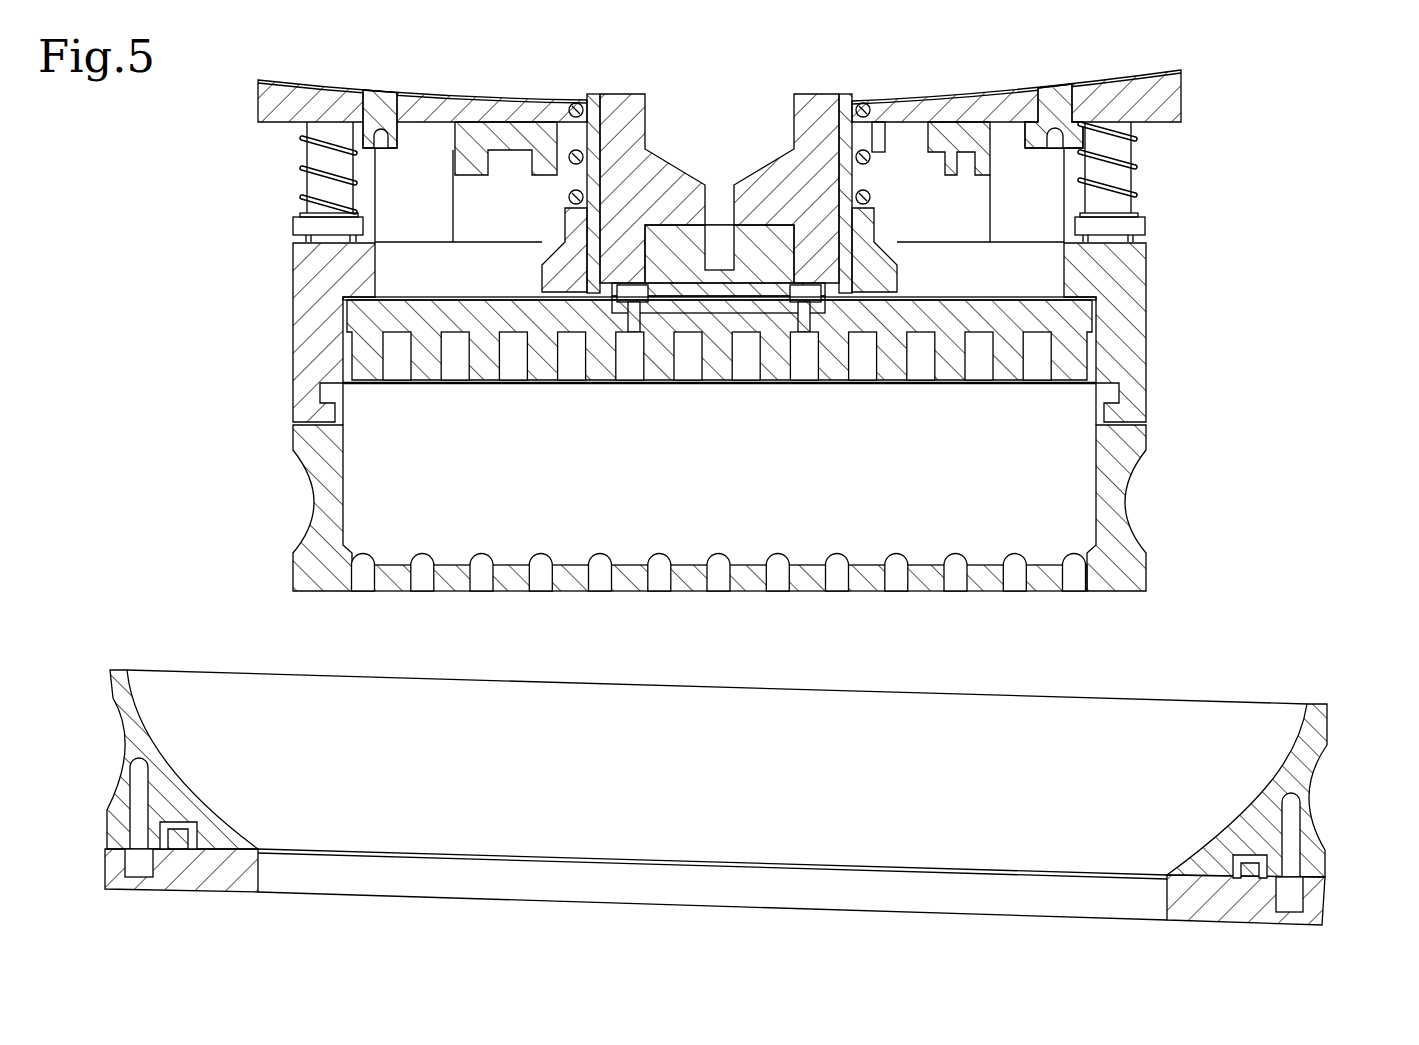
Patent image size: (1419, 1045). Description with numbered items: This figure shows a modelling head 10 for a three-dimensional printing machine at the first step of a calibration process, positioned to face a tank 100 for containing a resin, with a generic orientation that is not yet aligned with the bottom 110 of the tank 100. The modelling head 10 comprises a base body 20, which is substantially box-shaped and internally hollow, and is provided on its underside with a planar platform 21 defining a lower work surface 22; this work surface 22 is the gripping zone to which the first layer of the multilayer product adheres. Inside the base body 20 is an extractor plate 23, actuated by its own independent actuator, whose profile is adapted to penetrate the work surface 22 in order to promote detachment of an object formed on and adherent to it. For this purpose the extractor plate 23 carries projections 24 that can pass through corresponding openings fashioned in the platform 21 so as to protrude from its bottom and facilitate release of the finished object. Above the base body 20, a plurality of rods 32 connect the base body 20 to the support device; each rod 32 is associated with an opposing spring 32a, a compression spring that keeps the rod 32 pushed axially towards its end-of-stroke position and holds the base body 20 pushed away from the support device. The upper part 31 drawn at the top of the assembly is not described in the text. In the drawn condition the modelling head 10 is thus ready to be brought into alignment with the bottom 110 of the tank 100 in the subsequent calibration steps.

The modelling head 10 is at (1234, 226).
The base body 20 is at (1184, 402).
The planar platform 21 is at (987, 585).
The lower work surface 22 is at (1042, 590).
The extractor plate 23 is at (977, 298).
The projections 24 is at (452, 373).
The cover 31 is at (1157, 92).
The rod 32 is at (290, 188).
The opposing spring 32a is at (302, 143).
The tank 100 is at (1300, 763).
The bottom 110 is at (433, 878).